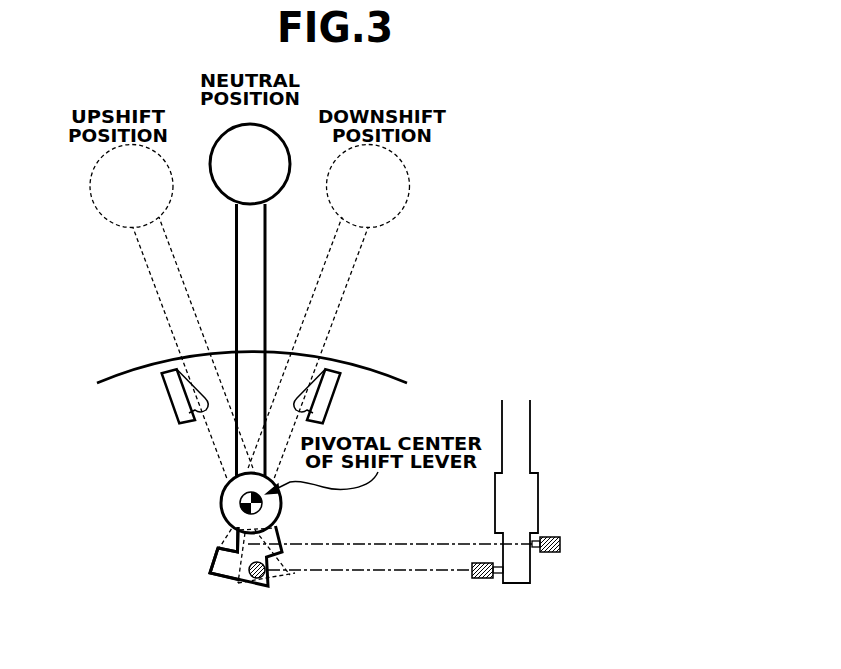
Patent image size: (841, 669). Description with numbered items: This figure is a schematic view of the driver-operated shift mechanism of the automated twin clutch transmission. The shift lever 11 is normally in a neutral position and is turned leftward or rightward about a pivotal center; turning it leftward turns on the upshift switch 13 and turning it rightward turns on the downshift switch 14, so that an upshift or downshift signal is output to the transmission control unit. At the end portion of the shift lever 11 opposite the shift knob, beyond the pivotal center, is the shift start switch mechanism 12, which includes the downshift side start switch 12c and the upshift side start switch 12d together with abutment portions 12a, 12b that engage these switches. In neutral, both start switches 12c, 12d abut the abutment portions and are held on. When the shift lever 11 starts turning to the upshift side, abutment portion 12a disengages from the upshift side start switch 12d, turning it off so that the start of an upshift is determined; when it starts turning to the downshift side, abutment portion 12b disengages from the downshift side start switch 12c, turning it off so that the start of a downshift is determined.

The shift lever 11 is at (264, 173).
The shift start switch mechanism 12 is at (272, 588).
The abutment portion 12a is at (277, 533).
The abutment portion 12b is at (227, 572).
The downshift side start switch 12c is at (264, 580).
The upshift side start switch 12d is at (238, 536).
The upshift switch 13 is at (172, 408).
The downshift switch 14 is at (333, 405).